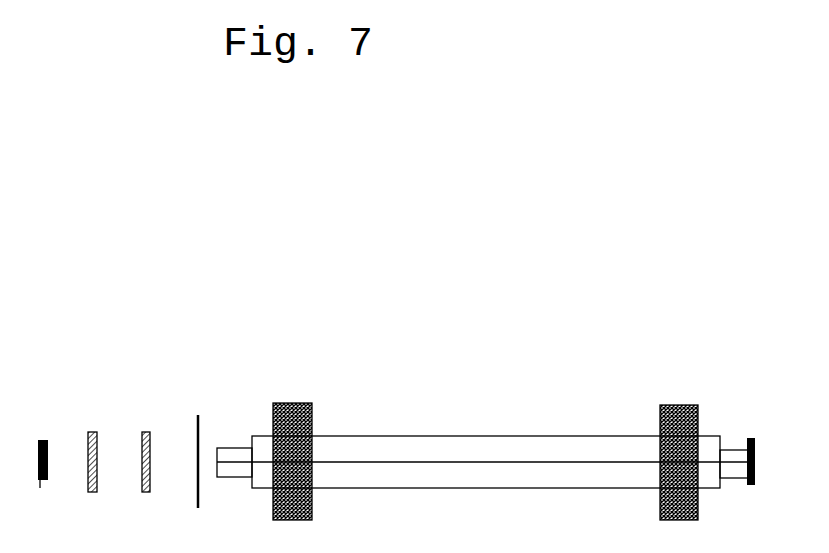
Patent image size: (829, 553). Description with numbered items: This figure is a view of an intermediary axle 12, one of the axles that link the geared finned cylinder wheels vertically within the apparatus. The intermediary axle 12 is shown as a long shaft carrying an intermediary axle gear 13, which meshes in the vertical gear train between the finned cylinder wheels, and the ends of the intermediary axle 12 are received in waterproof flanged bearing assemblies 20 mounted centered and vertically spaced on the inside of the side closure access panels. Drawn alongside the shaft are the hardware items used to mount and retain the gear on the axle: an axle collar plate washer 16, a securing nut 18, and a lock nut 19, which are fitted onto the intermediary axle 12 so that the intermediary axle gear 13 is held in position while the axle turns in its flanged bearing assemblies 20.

The intermediary axle 12 is at (456, 437).
The intermediary axle gear 13 is at (292, 403).
The axle collar plate washer 16 is at (198, 415).
The securing nut 18 is at (148, 432).
The lock nut 19 is at (95, 432).
The flanged bearing assembly 20 is at (40, 440).